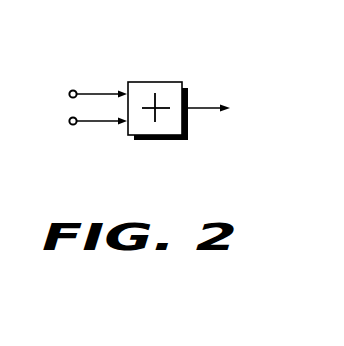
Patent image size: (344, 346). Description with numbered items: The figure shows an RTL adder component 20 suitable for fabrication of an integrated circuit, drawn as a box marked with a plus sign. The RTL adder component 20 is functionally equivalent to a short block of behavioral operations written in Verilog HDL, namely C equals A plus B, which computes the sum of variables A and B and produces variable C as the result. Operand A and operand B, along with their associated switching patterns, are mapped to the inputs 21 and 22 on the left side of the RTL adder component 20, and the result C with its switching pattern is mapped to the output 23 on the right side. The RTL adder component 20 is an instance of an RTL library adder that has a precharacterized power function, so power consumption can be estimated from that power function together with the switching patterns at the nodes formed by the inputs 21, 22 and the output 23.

The RTL adder component 20 is at (233, 190).
The input 21 is at (77, 83).
The input 22 is at (75, 132).
The output 23 is at (227, 100).